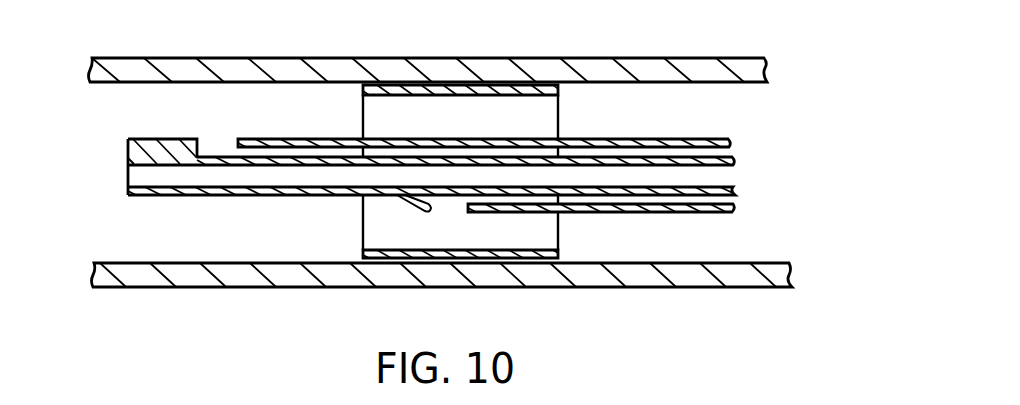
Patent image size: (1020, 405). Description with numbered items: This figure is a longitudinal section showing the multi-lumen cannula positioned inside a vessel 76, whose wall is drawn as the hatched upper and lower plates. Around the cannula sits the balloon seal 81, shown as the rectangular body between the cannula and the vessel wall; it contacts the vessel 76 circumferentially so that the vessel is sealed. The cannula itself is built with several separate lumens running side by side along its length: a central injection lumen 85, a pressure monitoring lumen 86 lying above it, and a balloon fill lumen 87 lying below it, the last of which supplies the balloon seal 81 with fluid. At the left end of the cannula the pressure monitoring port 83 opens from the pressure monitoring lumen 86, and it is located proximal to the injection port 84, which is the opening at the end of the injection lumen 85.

The vessel 76 is at (648, 67).
The balloon seal 81 is at (558, 238).
The pressure monitoring port 83 is at (213, 142).
The injection port 84 is at (132, 177).
The injection lumen 85 is at (722, 178).
The pressure monitoring lumen 86 is at (730, 148).
The balloon fill lumen 87 is at (733, 200).